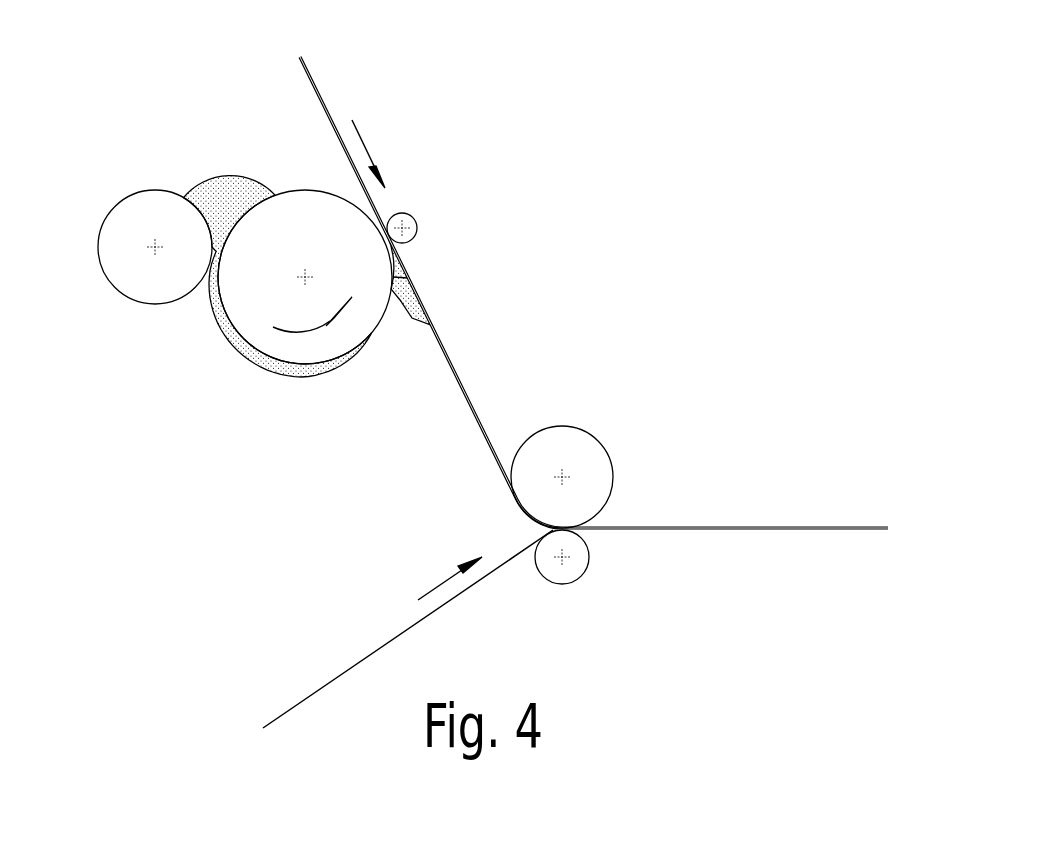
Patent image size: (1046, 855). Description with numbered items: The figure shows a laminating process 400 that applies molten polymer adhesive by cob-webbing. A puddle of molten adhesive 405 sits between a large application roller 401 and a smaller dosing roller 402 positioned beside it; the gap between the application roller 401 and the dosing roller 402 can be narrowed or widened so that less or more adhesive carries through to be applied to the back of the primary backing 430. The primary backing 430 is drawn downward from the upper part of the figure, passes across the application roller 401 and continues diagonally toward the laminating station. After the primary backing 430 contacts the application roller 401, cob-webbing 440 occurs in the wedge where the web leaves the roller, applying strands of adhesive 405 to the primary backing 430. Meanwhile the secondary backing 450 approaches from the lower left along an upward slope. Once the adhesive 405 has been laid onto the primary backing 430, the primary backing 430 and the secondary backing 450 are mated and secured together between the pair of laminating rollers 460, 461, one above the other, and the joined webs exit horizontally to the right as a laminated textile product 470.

The process 400 is at (613, 192).
The application roller 401 is at (240, 320).
The dosing roller 402 is at (108, 272).
The molten adhesive 405 is at (213, 192).
The primary backing 430 is at (316, 90).
The cob-webbing 440 is at (406, 302).
The secondary backing 450 is at (385, 645).
The laminating roller 460 is at (595, 452).
The laminating roller 461 is at (580, 572).
The laminated textile product 470 is at (798, 527).